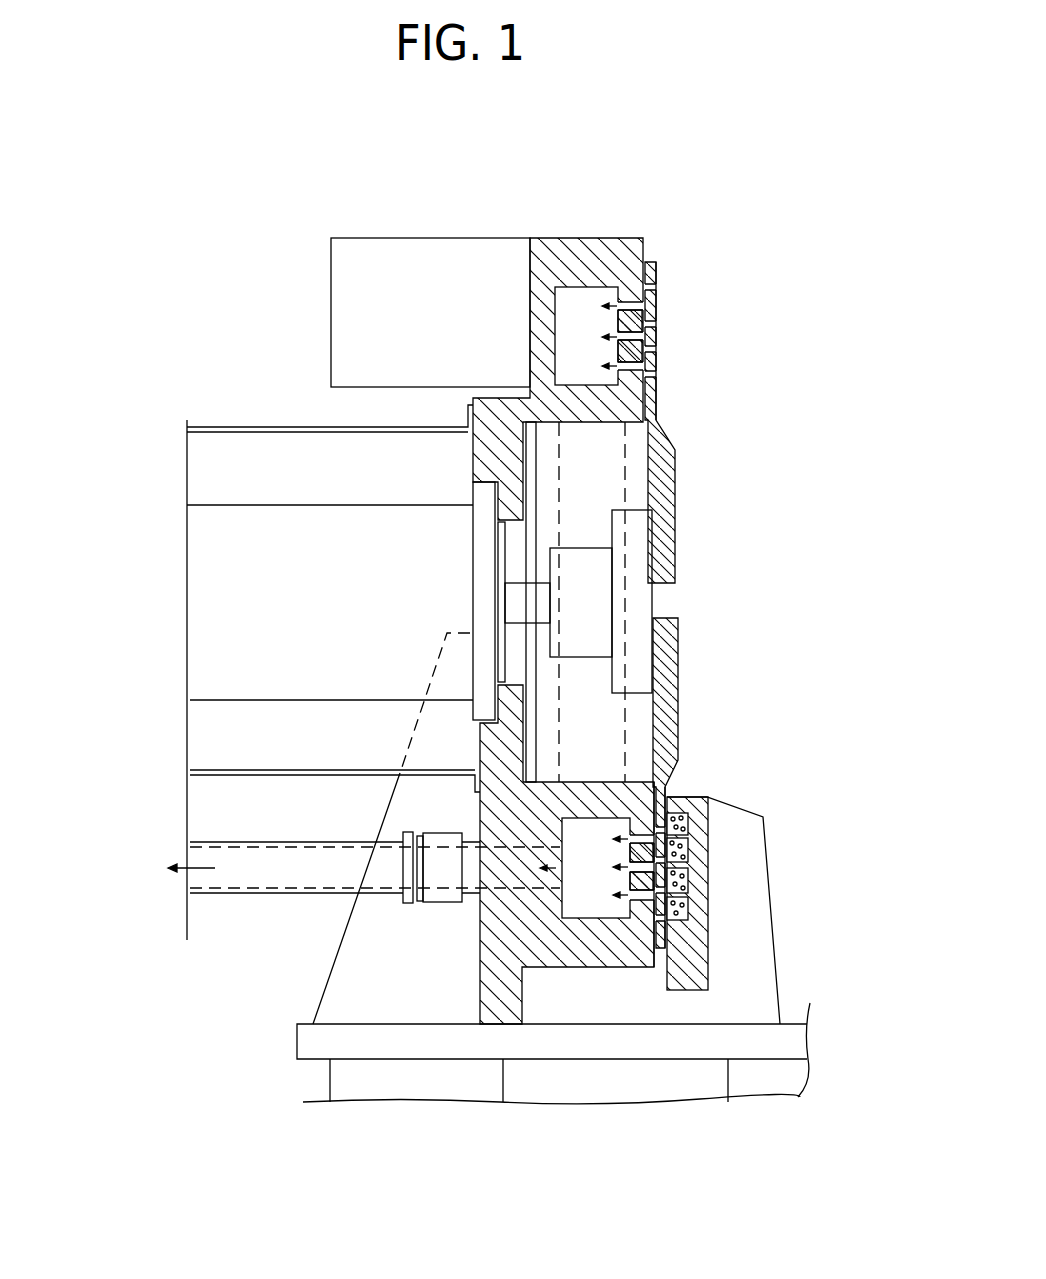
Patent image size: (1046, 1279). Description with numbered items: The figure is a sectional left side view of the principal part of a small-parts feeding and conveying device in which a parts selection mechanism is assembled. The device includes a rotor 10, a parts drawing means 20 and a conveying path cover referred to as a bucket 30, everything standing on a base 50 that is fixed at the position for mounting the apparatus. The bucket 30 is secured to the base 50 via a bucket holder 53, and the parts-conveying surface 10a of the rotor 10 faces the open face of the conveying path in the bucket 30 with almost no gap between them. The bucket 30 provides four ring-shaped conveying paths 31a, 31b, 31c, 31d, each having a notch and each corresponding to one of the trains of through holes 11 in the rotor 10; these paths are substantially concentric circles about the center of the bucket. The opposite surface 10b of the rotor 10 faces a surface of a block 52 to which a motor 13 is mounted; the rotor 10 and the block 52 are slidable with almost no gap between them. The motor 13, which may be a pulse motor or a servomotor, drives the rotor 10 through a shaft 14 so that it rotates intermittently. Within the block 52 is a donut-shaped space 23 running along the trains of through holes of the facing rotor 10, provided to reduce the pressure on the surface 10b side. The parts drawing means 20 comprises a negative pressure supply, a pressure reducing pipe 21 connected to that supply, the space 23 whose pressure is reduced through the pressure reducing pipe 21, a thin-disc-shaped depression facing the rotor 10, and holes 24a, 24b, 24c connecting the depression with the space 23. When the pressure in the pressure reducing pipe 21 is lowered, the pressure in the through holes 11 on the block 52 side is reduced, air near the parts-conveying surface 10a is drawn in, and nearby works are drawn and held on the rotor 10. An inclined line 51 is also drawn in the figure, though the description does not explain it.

The rotor 10 is at (678, 497).
The parts-conveying surface 10a is at (657, 333).
The surface opposite the parts-conveying surface 10b is at (643, 905).
The through hole 11 is at (658, 320).
The motor 13 is at (278, 505).
The shaft 14 is at (508, 582).
The parts drawing means 20 is at (372, 950).
The pressure reducing pipe 21 is at (257, 893).
The space 23 is at (547, 982).
The hole 24a is at (625, 300).
The hole 24b is at (628, 866).
The hole 24c is at (622, 830).
The bucket 30 is at (684, 1002).
The conveying path 31a is at (685, 922).
The conveying path 31b is at (681, 883).
The conveying path 31c is at (683, 848).
The conveying path 31d is at (683, 827).
The base 50 is at (297, 1047).
The inclined line 51 is at (383, 813).
The block 52 is at (452, 965).
The bucket holder 53 is at (765, 843).